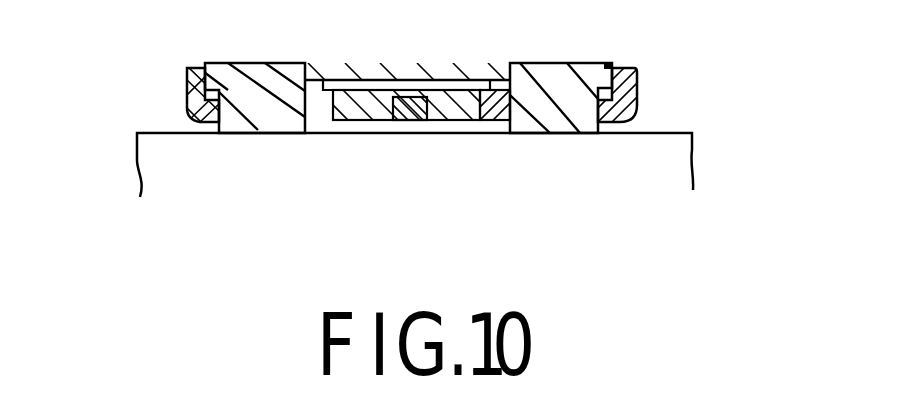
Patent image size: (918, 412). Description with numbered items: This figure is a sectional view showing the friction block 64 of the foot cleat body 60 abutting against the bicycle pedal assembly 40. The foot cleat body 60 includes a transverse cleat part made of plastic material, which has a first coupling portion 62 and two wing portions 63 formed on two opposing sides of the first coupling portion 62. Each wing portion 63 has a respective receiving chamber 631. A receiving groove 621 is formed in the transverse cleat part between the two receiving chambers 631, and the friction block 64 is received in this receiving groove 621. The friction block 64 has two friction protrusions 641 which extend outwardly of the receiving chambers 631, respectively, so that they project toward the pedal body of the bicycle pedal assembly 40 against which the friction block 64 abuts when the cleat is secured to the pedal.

The bicycle pedal assembly 40 is at (700, 168).
The foot cleat body 60 is at (487, 55).
The first coupling portion 62 is at (380, 85).
The receiving groove 621 is at (424, 85).
The wing portion 63 is at (623, 77).
The receiving chamber 631 is at (190, 92).
The friction block 64 is at (415, 70).
The friction protrusion 641 is at (259, 127).